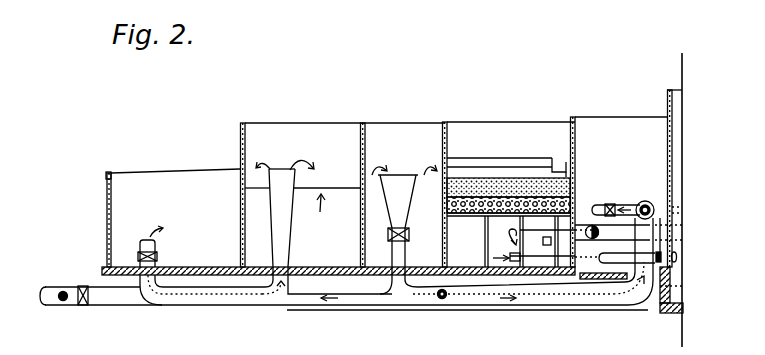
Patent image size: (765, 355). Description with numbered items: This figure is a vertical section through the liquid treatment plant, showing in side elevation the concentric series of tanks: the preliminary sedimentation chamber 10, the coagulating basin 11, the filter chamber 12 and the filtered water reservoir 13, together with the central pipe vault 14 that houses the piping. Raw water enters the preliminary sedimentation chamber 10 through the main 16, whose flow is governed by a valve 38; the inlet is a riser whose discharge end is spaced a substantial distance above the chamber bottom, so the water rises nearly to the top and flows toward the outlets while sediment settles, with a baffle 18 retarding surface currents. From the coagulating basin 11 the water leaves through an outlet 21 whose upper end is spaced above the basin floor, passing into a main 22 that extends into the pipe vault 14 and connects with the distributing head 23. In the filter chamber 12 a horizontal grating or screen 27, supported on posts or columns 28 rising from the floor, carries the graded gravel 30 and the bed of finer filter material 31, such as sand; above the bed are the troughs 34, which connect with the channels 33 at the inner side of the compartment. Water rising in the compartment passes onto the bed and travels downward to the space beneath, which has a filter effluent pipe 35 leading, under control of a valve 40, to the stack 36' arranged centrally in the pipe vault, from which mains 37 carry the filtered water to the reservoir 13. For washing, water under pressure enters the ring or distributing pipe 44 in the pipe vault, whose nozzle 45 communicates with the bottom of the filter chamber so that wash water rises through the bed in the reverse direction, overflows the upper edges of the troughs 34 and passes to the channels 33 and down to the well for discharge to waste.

The preliminary sedimentation chamber 10 is at (272, 127).
The coagulating basin 11 is at (395, 103).
The filter chamber 12 is at (518, 104).
The filtered water reservoir 13 is at (162, 178).
The central pipe vault 14 is at (656, 105).
The main 16 is at (127, 296).
The baffle 18 is at (337, 235).
The outlet 21 is at (415, 154).
The main 22 is at (558, 296).
The distributing head 23 is at (598, 205).
The grating or screen 27 is at (441, 231).
The post or column 28 is at (485, 243).
The graded gravel 30 is at (443, 207).
The bed of finer filter material 31 is at (451, 184).
The channel 33 is at (563, 163).
The trough 34 is at (503, 158).
The filter effluent pipe 35 is at (512, 259).
The stack 36' is at (658, 57).
The main 37 is at (293, 302).
The valve 38 is at (80, 303).
The valve 40 is at (653, 201).
The ring or distributing pipe 44 is at (586, 224).
The nozzle or outlet 45 is at (537, 237).